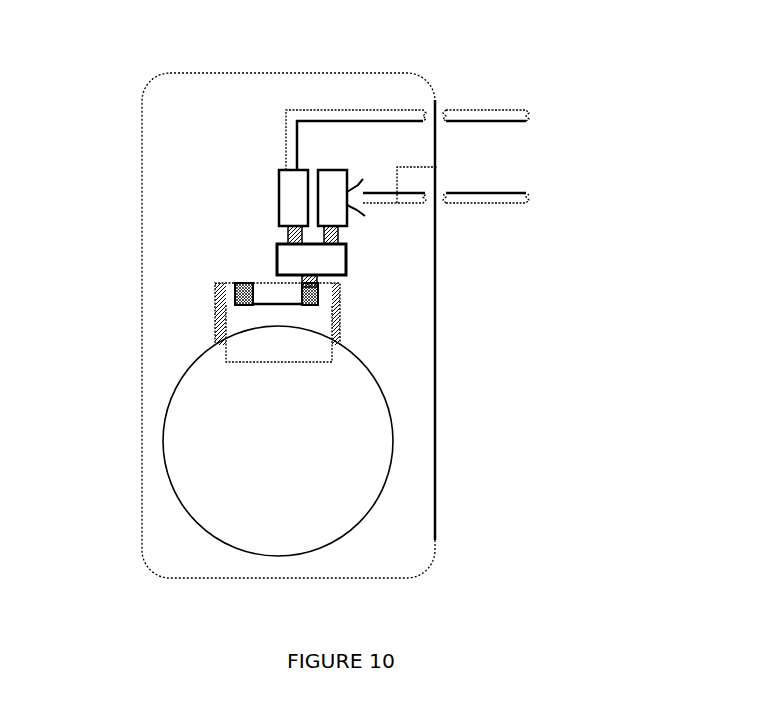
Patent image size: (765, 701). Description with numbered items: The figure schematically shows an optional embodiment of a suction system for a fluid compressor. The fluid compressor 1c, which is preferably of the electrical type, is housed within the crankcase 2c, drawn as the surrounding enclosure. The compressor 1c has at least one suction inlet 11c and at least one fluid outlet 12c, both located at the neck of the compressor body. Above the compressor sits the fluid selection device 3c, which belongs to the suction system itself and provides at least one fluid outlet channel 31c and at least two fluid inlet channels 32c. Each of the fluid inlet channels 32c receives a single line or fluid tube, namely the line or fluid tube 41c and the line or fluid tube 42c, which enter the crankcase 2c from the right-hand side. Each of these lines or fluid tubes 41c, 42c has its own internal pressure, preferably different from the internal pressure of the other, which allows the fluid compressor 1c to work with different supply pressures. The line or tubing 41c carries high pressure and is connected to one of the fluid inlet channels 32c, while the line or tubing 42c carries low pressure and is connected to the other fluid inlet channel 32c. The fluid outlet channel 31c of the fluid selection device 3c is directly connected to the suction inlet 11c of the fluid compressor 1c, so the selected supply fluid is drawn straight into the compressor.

The fluid compressor 1c is at (237, 446).
The crankcase 2c is at (412, 518).
The fluid selection device 3c is at (327, 260).
The suction inlet 11c is at (320, 300).
The fluid outlet 12c is at (243, 295).
The fluid outlet channel 31c is at (277, 278).
The fluid inlet channels 32c is at (277, 233).
The line and/or fluid tube 41c is at (355, 115).
The line and/or fluid tube 42c is at (437, 167).